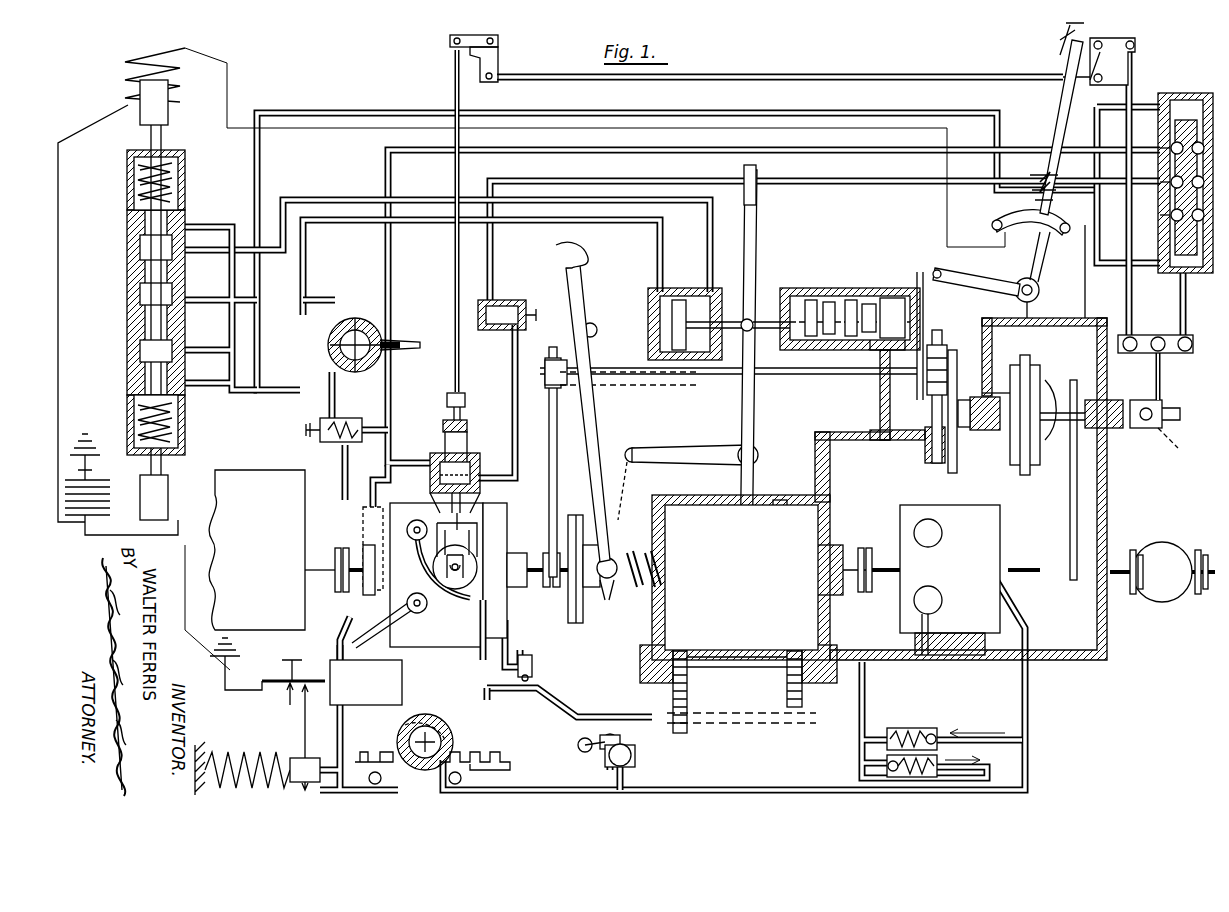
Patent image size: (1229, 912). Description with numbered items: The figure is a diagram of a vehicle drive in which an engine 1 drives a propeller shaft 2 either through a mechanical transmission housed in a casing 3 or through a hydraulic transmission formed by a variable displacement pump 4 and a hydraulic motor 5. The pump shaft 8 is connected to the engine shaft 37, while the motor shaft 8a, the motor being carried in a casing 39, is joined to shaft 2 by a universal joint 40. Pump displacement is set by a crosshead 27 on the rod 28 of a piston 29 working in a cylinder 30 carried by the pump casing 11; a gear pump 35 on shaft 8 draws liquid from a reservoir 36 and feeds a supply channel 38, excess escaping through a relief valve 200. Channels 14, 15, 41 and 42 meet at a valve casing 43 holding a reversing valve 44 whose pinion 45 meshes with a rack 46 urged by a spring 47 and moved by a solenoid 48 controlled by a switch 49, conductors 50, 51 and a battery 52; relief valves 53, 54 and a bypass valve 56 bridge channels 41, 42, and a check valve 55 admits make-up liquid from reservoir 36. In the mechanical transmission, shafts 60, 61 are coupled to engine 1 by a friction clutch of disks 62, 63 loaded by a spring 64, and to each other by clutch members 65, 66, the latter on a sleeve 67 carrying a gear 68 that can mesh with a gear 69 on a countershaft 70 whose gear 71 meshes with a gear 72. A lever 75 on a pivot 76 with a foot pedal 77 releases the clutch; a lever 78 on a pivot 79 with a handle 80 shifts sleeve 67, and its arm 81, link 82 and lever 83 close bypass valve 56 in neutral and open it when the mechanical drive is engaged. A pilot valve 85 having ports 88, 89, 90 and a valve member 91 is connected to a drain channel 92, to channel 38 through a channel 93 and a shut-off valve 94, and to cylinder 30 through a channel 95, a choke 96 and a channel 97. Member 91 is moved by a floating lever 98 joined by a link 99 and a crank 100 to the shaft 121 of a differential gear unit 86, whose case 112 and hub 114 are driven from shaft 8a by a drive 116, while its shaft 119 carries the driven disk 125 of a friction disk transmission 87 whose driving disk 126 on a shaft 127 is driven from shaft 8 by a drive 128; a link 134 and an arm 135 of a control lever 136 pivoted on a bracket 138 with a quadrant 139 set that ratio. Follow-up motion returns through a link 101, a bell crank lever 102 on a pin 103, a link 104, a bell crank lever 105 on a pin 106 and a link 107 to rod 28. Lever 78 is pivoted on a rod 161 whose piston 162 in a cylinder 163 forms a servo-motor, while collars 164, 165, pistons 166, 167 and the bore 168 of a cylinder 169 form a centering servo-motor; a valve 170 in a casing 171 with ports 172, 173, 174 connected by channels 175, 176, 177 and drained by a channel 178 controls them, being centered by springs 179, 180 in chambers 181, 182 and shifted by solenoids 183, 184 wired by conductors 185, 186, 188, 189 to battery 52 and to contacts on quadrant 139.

The engine 1 is at (272, 550).
The propeller shaft 2 is at (440, 391).
The transmission casing 3 is at (730, 658).
The variable displacement pump 4 is at (1186, 391).
The hydraulic motor 5 is at (950, 580).
The pump shaft 8 is at (350, 568).
The motor shaft 8a is at (876, 568).
The pump casing 11 is at (405, 600).
The channel 14 is at (405, 580).
The channel 15 is at (462, 605).
The crosshead 27 is at (466, 426).
The piston rod 28 is at (445, 440).
The piston 29 is at (475, 470).
The cylinder 30 is at (430, 485).
The gear pump 35 is at (368, 512).
The reservoir 36 is at (395, 672).
The engine shaft 37 is at (308, 585).
The supply channel 38 is at (388, 458).
The motor casing 39 is at (1108, 655).
The universal joint 40 is at (1162, 572).
The channel 41 is at (540, 790).
The channel 42 is at (582, 700).
The valve casing 43 is at (450, 735).
The reversing valve 44 is at (405, 738).
The pinion 45 is at (420, 770).
The rack 46 is at (490, 752).
The spring 47 is at (235, 775).
The solenoid 48 is at (283, 772).
The switch 49 is at (300, 658).
The conductor 50 is at (303, 703).
The conductor 51 is at (196, 590).
The battery 52 is at (102, 490).
The high pressure relief valve 53 is at (932, 728).
The high pressure relief valve 54 is at (887, 768).
The check valve 55 is at (532, 657).
The bypass valve 56 is at (636, 762).
The shaft 60 is at (614, 582).
The shaft 61 is at (828, 590).
The clutch disk 62 is at (570, 610).
The clutch disk 63 is at (580, 612).
The spring 64 is at (632, 550).
The clutch member 65 is at (697, 595).
The clutch member 66 is at (716, 545).
The sleeve 67 is at (747, 583).
The gear 68 is at (782, 515).
The gear 69 is at (787, 690).
The countershaft 70 is at (738, 672).
The gear 71 is at (688, 724).
The gear 72 is at (682, 530).
The clutch lever 75 is at (578, 280).
The stationary pivot 76 is at (583, 328).
The foot pedal 77 is at (575, 252).
The gear shift lever 78 is at (752, 390).
The stationary pivot 79 is at (758, 452).
The handle 80 is at (756, 196).
The arm 81 is at (704, 446).
The link 82 is at (612, 732).
The lever 83 is at (585, 752).
The pilot valve 85 is at (1205, 70).
The differential gear unit 86 is at (1042, 345).
The variable speed friction disk transmission 87 is at (920, 438).
The port 88 is at (1168, 215).
The port 89 is at (1168, 148).
The port 90 is at (1168, 182).
The valve member 91 is at (1190, 268).
The drain channel 92 is at (1100, 220).
The channel 93 is at (390, 248).
The shut off valve 94 is at (380, 330).
The channel 95 is at (492, 240).
The choke 96 is at (495, 330).
The channel 97 is at (512, 385).
The floating lever 98 is at (1145, 335).
The link 99 is at (1156, 376).
The crank 100 is at (1140, 430).
The link 101 is at (1130, 287).
The bell crank lever 102 is at (1098, 82).
The stationary pin 103 is at (1125, 36).
The link 104 is at (840, 72).
The bell crank lever 105 is at (498, 66).
The stationary pin 106 is at (498, 40).
The link 107 is at (455, 270).
The differential case 112 is at (1035, 465).
The hollow hub 114 is at (1096, 398).
The drive 116 is at (1070, 512).
The shaft 119 is at (978, 430).
The shaft 121 is at (1178, 448).
The driven disk 125 is at (957, 470).
The driving disk 126 is at (920, 392).
The shaft 127 is at (838, 376).
The drive 128 is at (555, 470).
The link 134 is at (944, 336).
The arm 135 is at (976, 274).
The control lever 136 is at (1045, 276).
The bracket 138 is at (1052, 271).
The quadrant 139 is at (995, 222).
The rod 161 is at (730, 292).
The piston 162 is at (695, 268).
The stationary cylinder 163 is at (650, 310).
The collar 164 is at (800, 296).
The collar 165 is at (898, 300).
The piston 166 is at (811, 300).
The piston 167 is at (868, 302).
The bore 168 is at (850, 300).
The stationary cylinder 169 is at (830, 300).
The valve 170 is at (148, 322).
The valve casing 171 is at (126, 212).
The port 172 is at (138, 300).
The port 173 is at (138, 352).
The port 174 is at (138, 249).
The channel 175 is at (372, 295).
The channel 176 is at (306, 245).
The channel 177 is at (348, 197).
The drain channel 178 is at (306, 390).
The caged spring 179 is at (170, 170).
The caged spring 180 is at (175, 410).
The spring chamber 181 is at (178, 184).
The spring chamber 182 is at (178, 426).
The solenoid 183 is at (135, 66).
The solenoid 184 is at (168, 506).
The conductor 185 is at (70, 110).
The conductor 186 is at (228, 73).
The conductor 188 is at (170, 530).
The conductor 189 is at (372, 112).
The relief valve 200 is at (350, 418).